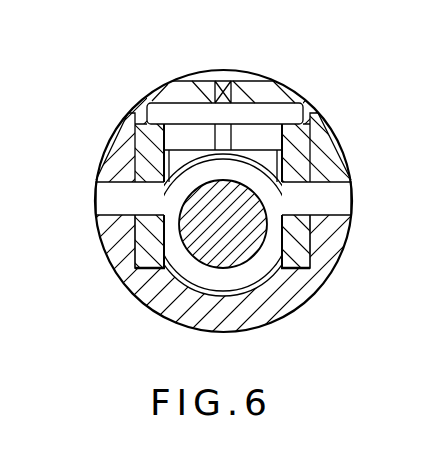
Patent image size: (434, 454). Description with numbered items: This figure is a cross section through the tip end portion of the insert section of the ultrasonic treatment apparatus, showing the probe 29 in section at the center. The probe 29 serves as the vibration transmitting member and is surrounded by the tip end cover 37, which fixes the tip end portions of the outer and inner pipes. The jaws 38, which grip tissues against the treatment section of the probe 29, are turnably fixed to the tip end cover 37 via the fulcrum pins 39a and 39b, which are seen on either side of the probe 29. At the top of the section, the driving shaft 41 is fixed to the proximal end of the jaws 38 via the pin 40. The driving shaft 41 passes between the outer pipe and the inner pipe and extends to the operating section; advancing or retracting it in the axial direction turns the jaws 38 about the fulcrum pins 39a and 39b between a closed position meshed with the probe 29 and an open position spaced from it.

The probe 29 is at (254, 252).
The tip end cover 37 is at (108, 148).
The jaws 38 is at (300, 153).
The fulcrum pin 39a is at (108, 201).
The fulcrum pin 39b is at (337, 203).
The pin 40 is at (185, 116).
The driving shaft 41 is at (222, 82).